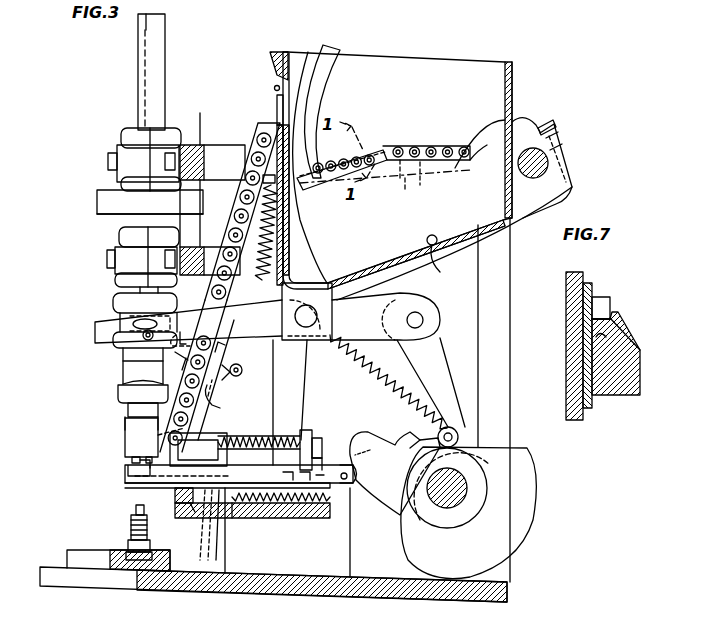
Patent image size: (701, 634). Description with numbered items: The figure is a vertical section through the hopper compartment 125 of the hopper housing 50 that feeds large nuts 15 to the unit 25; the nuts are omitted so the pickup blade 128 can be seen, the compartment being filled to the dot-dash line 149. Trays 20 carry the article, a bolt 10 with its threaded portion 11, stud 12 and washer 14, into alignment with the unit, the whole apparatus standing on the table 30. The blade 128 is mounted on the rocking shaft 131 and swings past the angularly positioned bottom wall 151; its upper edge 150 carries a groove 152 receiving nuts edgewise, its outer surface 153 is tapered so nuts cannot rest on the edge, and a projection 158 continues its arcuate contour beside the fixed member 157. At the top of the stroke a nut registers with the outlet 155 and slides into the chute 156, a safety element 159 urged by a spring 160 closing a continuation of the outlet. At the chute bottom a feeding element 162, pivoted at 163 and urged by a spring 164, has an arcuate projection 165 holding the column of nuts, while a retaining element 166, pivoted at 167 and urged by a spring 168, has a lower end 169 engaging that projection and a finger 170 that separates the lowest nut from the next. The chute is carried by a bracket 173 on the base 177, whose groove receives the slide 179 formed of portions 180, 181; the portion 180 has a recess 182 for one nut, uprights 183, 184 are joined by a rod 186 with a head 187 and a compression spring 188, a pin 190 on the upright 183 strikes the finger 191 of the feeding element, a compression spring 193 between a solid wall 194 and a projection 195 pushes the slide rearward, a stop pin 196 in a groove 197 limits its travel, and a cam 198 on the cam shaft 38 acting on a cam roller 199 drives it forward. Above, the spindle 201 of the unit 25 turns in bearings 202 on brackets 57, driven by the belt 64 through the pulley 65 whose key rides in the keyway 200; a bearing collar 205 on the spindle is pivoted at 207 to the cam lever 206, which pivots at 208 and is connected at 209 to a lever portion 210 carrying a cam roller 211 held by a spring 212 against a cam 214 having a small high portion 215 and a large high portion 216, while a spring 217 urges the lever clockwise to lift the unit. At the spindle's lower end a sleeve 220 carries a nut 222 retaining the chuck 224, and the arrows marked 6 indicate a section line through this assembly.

In FIG. 3, the keyway 200 is at (145, 49).
In FIG. 3, the spindle 201 is at (162, 66).
In FIG. 3, the unit 25 is at (124, 100).
In FIG. 3, the bearings 202 is at (121, 133).
In FIG. 3, the brackets 57 is at (198, 147).
In FIG. 3, the belt 64 is at (100, 200).
In FIG. 3, the pulley 65 is at (100, 220).
In FIG. 3, the direction arrow element 6 is at (130, 294).
In FIG. 3, the pivot 207 is at (128, 328).
In FIG. 3, the bearing collar 205 is at (113, 342).
In FIG. 3, the retaining element 166 is at (163, 358).
In FIG. 3, the sleeve 220 is at (128, 373).
In FIG. 3, the finger 170 is at (160, 383).
In FIG. 3, the nut 222 is at (125, 397).
In FIG. 3, the lower end 169 is at (150, 420).
In FIG. 3, the chuck 224 is at (130, 433).
In FIG. 3, the arcuate projection 165 is at (160, 440).
In FIG. 3, the bracket 173 is at (178, 453).
In FIG. 3, the large nut 15 is at (140, 468).
In FIG. 7, the large nut 15 is at (600, 300).
In FIG. 3, the recess 182 is at (125, 488).
In FIG. 3, the trays 20 is at (68, 550).
In FIG. 3, the stud 12 is at (134, 512).
In FIG. 3, the threaded portion 11 is at (131, 530).
In FIG. 3, the washer 14 is at (128, 548).
In FIG. 3, the bolt 10 is at (137, 591).
In FIG. 3, the base 177 is at (285, 592).
In FIG. 3, the table 30 is at (356, 590).
In FIG. 3, the portion 180 is at (178, 492).
In FIG. 3, the stop pin 196 is at (190, 510).
In FIG. 3, the pin 190 is at (197, 525).
In FIG. 3, the finger 191 is at (196, 525).
In FIG. 3, the groove 197 is at (210, 510).
In FIG. 3, the solid wall 194 is at (242, 518).
In FIG. 3, the compression spring 193 is at (282, 518).
In FIG. 3, the projection 195 is at (321, 512).
In FIG. 3, the cam roller 199 is at (349, 488).
In FIG. 3, the pivot 167 is at (160, 340).
In FIG. 3, the cam lever 206 is at (237, 345).
In FIG. 3, the pivot 163 is at (243, 372).
In FIG. 3, the spring 168 is at (225, 396).
In FIG. 3, the feeding element 162 is at (230, 410).
In FIG. 3, the spring 164 is at (220, 418).
In FIG. 3, the slide 179 is at (262, 440).
In FIG. 3, the upright 183 is at (270, 438).
In FIG. 3, the compression spring 188 is at (314, 428).
In FIG. 3, the upright 184 is at (312, 440).
In FIG. 3, the rod 186 is at (318, 448).
In FIG. 3, the head 187 is at (322, 462).
In FIG. 3, the portion 181 is at (325, 475).
In FIG. 3, the spring 212 is at (372, 380).
In FIG. 3, the cam 198 is at (405, 428).
In FIG. 3, the small high portion 215 is at (420, 450).
In FIG. 3, the cam roller 211 is at (458, 430).
In FIG. 3, the cam 214 is at (480, 490).
In FIG. 3, the cam shaft 38 is at (455, 500).
In FIG. 3, the large high portion 216 is at (528, 520).
In FIG. 3, the lever portion 210 is at (455, 362).
In FIG. 3, the pivot 209 is at (423, 320).
In FIG. 3, the pivot 208 is at (317, 318).
In FIG. 3, the bottom wall 151 is at (450, 259).
In FIG. 3, the spring 217 is at (285, 235).
In FIG. 3, the fixed member 157 is at (305, 244).
In FIG. 3, the projection 158 is at (329, 77).
In FIG. 3, the spring 160 is at (278, 62).
In FIG. 3, the safety element 159 is at (272, 86).
In FIG. 3, the outlet 155 is at (280, 118).
In FIG. 3, the chute 156 is at (252, 135).
In FIG. 3, the upper edge 150 is at (412, 146).
In FIG. 3, the pickup blade 128 is at (485, 145).
In FIG. 7, the pickup blade 128 is at (635, 388).
In FIG. 3, the dot-dash line 149 is at (432, 168).
In FIG. 3, the groove 152 is at (415, 178).
In FIG. 7, the groove 152 is at (608, 335).
In FIG. 3, the outer surface 153 is at (318, 180).
In FIG. 7, the outer surface 153 is at (622, 332).
In FIG. 3, the hopper compartment 125 is at (455, 62).
In FIG. 3, the hopper housing 50 is at (513, 80).
In FIG. 7, the hopper housing 50 is at (566, 320).
In FIG. 3, the rocking shaft 131 is at (566, 190).